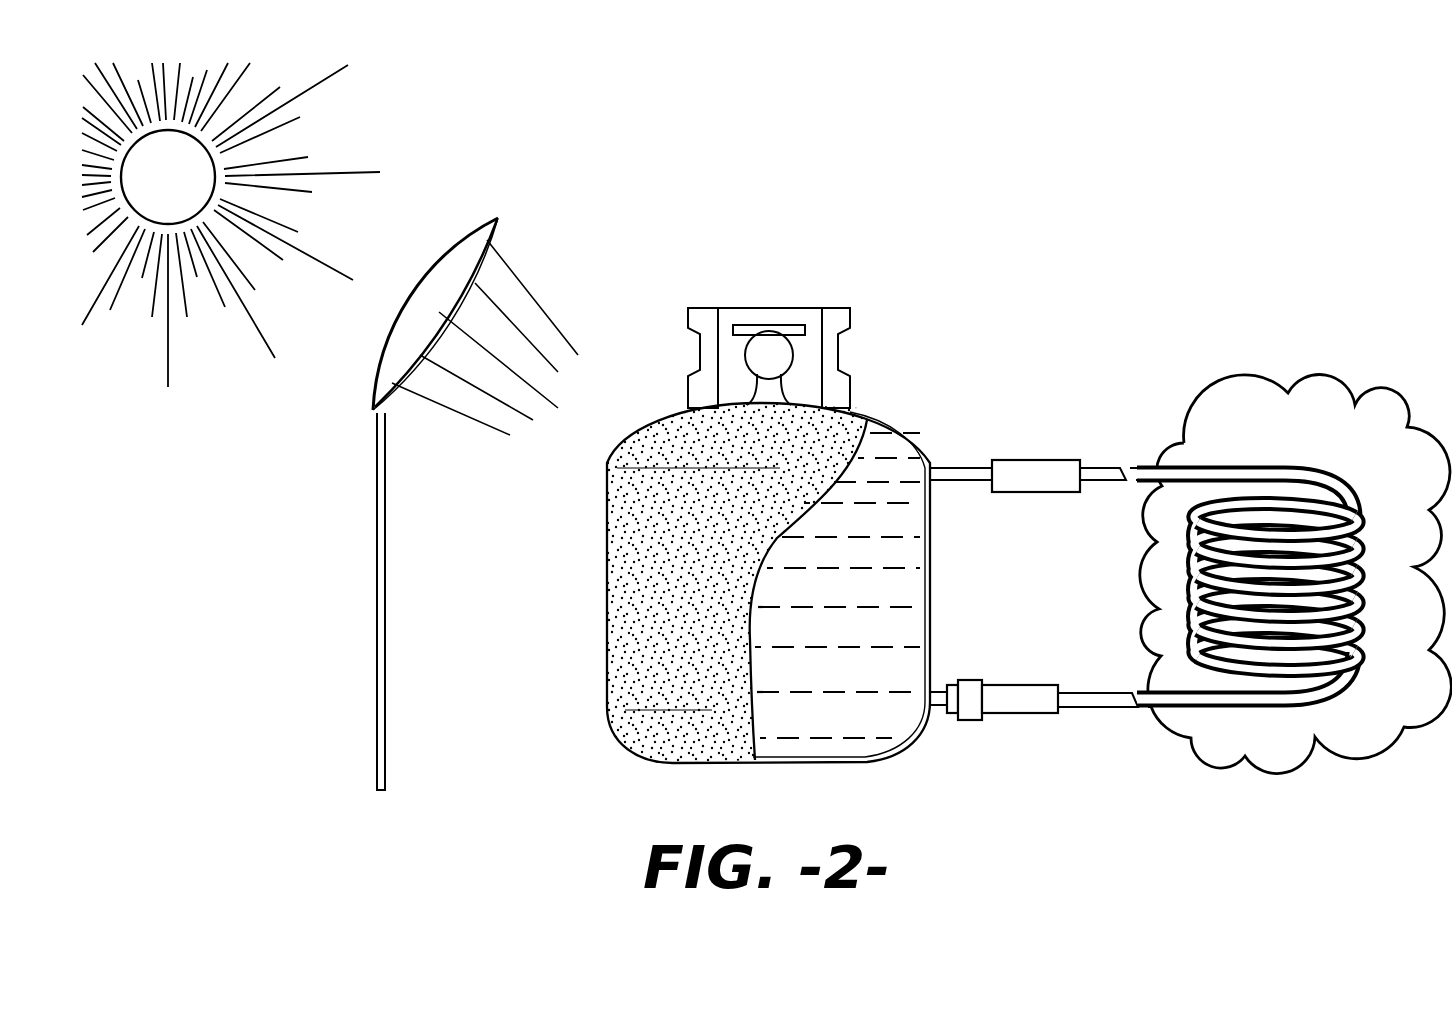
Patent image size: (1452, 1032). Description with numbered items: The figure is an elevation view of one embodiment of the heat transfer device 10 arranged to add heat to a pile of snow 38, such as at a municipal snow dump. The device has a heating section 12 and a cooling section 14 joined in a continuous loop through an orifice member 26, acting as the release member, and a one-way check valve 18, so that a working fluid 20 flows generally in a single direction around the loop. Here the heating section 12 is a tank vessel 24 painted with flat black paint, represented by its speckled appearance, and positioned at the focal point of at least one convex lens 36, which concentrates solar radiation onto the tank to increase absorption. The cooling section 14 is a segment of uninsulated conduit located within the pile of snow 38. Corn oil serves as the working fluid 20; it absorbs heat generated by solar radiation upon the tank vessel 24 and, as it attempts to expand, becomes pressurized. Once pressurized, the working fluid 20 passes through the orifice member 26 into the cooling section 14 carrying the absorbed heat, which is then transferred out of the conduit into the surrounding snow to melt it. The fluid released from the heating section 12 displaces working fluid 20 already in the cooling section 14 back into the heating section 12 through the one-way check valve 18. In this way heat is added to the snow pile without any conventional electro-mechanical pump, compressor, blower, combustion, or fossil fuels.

The heat transfer device 10 is at (938, 297).
The heating section 12 is at (660, 420).
The cooling section 14 is at (1340, 476).
The one-way check valve 18 is at (970, 682).
The working fluid 20 is at (880, 490).
The tank vessel 24 is at (858, 412).
The orifice member 26 is at (1048, 460).
The convex lens 36 is at (506, 237).
The pile of snow 38 is at (1250, 392).